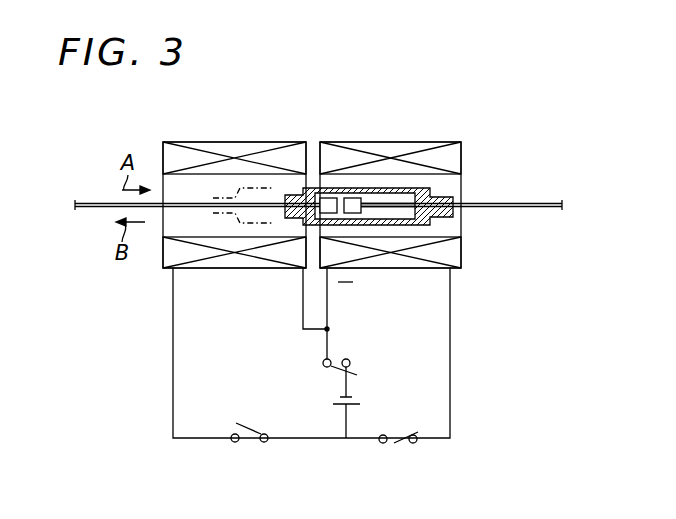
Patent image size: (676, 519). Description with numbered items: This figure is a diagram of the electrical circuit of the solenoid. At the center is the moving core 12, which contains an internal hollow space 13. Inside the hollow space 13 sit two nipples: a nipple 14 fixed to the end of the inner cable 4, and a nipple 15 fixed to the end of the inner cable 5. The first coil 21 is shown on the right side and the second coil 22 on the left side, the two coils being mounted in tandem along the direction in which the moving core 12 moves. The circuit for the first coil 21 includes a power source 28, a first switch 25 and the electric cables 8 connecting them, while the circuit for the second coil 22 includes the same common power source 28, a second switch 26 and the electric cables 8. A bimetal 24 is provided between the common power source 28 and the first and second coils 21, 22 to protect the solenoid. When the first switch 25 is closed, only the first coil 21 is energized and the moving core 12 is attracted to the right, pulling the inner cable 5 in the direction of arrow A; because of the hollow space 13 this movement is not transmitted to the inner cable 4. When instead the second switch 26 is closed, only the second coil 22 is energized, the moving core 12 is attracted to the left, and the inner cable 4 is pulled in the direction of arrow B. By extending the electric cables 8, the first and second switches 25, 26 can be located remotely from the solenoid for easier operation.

The inner cable 4 is at (530, 202).
The inner cable 5 is at (102, 201).
The electric cables 8 is at (173, 320).
The moving core 12 is at (452, 196).
The hollow space 13 is at (382, 196).
The nipple 14 is at (352, 198).
The nipple 15 is at (328, 198).
The first coil 21 is at (426, 142).
The second coil 22 is at (235, 142).
The bimetal 24 is at (325, 375).
The first switch 25 is at (400, 450).
The second switch 26 is at (253, 450).
The power source 28 is at (370, 396).